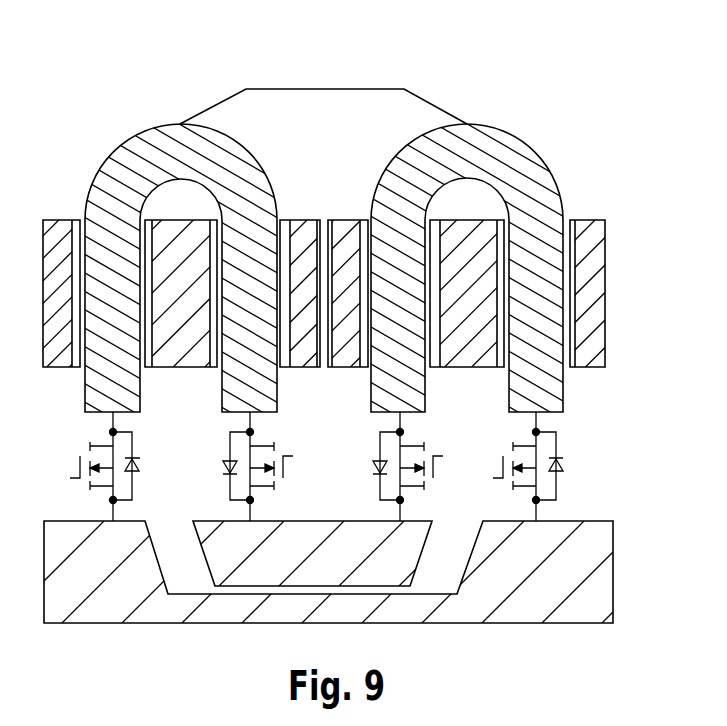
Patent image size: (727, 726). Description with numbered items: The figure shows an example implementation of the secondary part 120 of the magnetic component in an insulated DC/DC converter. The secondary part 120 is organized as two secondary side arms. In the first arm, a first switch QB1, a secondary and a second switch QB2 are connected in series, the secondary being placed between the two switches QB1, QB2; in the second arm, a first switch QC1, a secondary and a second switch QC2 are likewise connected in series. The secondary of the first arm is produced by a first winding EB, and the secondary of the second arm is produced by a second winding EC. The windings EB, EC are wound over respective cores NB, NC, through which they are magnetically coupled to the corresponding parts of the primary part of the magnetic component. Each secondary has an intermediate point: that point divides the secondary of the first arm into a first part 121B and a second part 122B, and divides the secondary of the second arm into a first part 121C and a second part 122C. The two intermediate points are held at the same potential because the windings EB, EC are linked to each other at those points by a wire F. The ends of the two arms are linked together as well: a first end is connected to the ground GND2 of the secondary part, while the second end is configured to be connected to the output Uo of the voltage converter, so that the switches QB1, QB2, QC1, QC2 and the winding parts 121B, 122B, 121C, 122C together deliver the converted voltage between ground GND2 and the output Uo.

The secondary part 120 is at (440, 83).
The wire F is at (322, 89).
The first winding EB is at (112, 172).
The second winding EC is at (538, 181).
The core NB is at (55, 232).
The core NC is at (598, 302).
The first part of the secondary of arm B 121B is at (267, 389).
The second part of the secondary of arm B 122B is at (136, 384).
The first part of the secondary of arm C 121C is at (412, 400).
The second part of the secondary of arm C 122C is at (550, 403).
The first switch QB1 is at (262, 489).
The second switch QB2 is at (72, 463).
The first switch QC1 is at (412, 489).
The second switch QC2 is at (558, 444).
The output of the voltage converter Uo is at (311, 553).
The ground of the secondary part GND2 is at (352, 572).